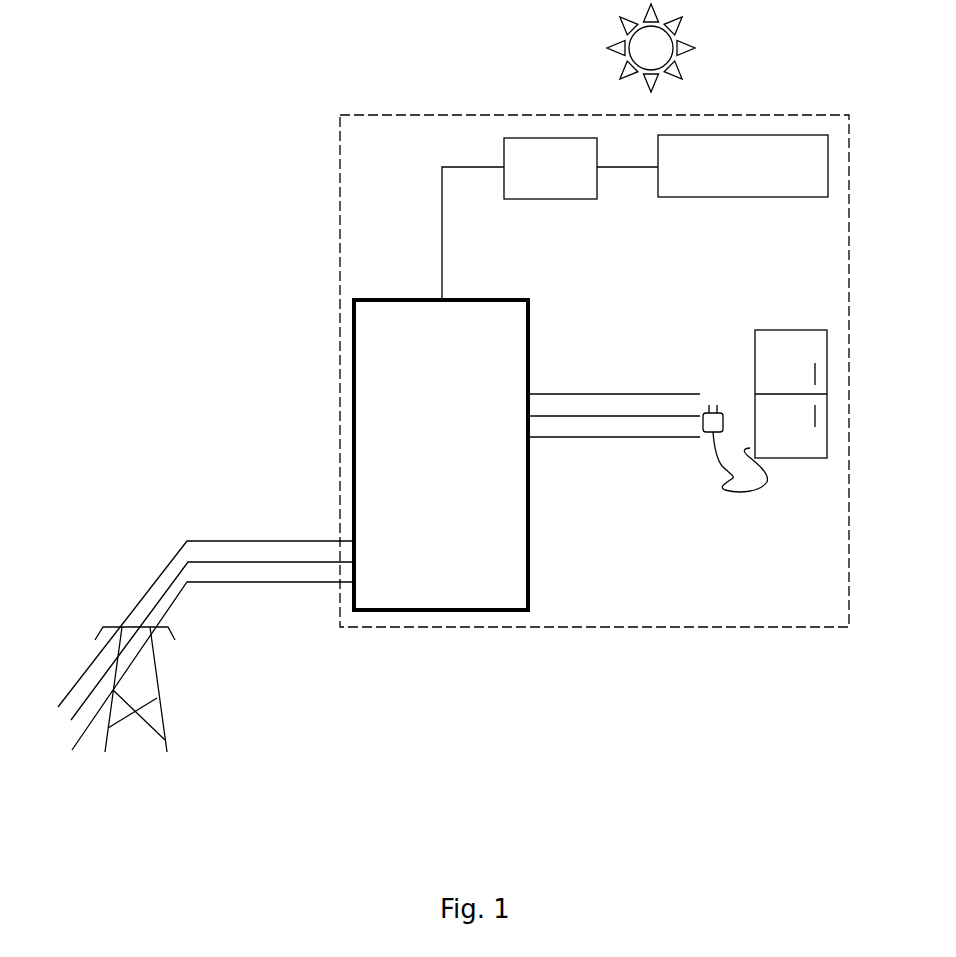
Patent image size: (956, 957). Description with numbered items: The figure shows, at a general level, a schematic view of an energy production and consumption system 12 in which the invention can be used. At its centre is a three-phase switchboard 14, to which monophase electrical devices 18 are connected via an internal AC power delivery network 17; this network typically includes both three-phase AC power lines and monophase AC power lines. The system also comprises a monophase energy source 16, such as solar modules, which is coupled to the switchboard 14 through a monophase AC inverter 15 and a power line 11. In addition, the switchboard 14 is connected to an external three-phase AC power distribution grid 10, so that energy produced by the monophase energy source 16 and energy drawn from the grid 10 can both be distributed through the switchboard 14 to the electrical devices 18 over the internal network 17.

The external three-phase AC power distribution grid 10 is at (144, 568).
The power line 11 is at (442, 239).
The energy production and consumption system 12 is at (339, 232).
The three-phase switchboard 14 is at (426, 566).
The monophase AC inverter 15 is at (535, 184).
The monophase energy source 16 is at (727, 179).
The internal AC power delivery network 17 is at (620, 392).
The monophase electrical devices 18 is at (825, 330).